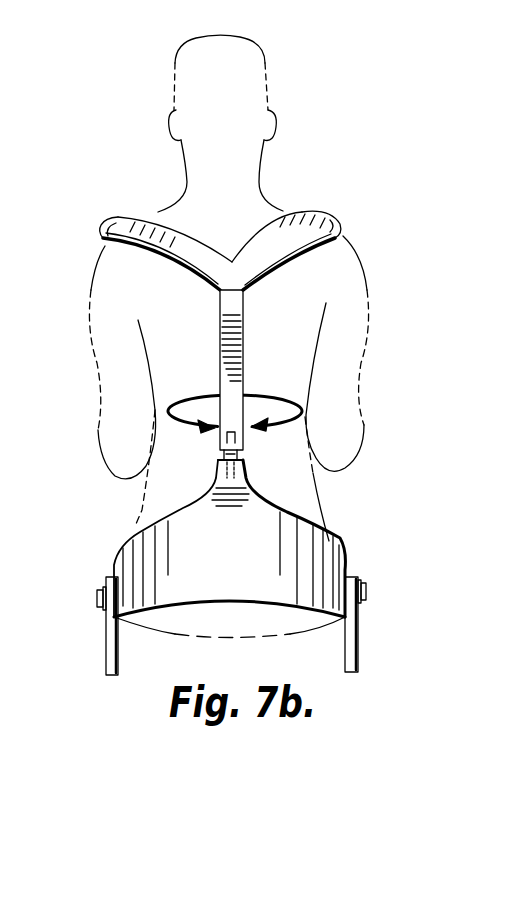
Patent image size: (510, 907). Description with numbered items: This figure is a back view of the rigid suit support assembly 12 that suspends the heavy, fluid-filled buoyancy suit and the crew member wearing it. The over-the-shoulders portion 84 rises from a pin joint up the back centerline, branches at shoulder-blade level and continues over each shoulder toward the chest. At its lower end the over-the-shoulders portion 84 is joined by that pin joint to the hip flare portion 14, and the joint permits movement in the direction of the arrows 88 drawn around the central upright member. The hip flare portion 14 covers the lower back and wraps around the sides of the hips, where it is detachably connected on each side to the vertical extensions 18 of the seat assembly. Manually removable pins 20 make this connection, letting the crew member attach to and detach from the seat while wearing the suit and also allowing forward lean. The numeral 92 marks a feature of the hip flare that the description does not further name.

The harness assembly 12 is at (127, 200).
The shoulder strap 84 is at (282, 234).
The rotation of support bar 88 is at (260, 394).
The shell housing 14 is at (299, 516).
The rim band of shell 92 is at (343, 543).
The mounting plate 18 is at (106, 643).
The bolt 20 is at (98, 600).